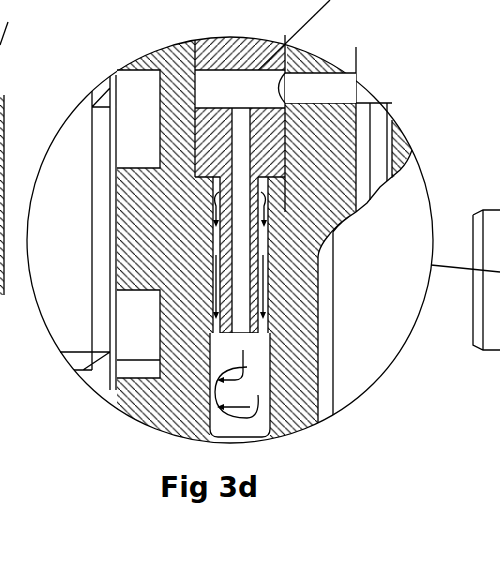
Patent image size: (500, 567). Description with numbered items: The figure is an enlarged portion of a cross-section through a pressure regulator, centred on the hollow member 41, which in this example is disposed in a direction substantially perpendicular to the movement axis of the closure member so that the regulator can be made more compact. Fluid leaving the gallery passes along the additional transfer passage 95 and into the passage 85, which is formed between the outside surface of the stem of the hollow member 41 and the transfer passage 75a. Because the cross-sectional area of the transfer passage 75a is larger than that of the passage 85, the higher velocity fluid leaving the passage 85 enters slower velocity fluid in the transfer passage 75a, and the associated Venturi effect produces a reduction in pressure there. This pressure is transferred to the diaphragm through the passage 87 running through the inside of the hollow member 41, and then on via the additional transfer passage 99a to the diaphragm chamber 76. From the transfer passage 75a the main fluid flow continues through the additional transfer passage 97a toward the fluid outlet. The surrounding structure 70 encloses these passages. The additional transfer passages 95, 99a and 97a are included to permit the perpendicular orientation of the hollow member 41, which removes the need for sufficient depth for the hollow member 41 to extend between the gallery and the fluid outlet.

The outer housing 70 is at (0, 155).
The hollow member 41 is at (235, 311).
The passage 87 is at (238, 229).
The passage 85 is at (300, 308).
The diaphragm chamber 76 is at (362, 112).
The transfer passage 99a is at (313, 87).
The transfer passage 95 is at (268, 240).
The transfer passage 75a is at (240, 342).
The transfer passage 97a is at (233, 393).